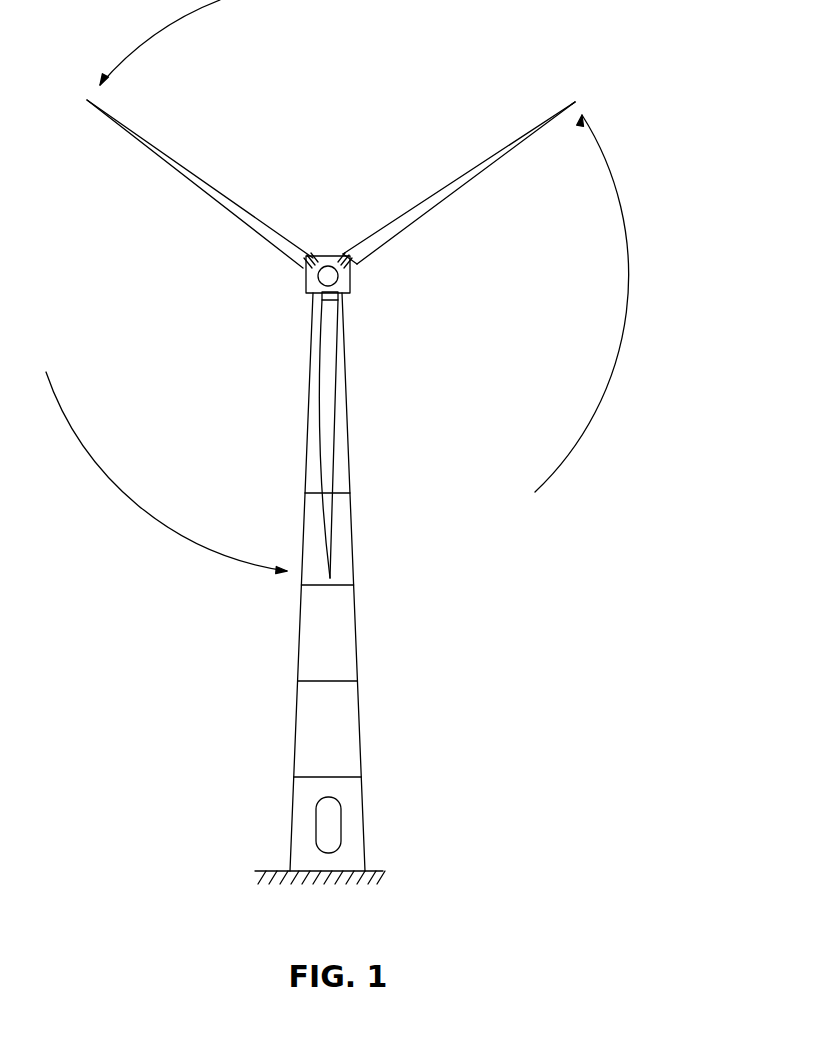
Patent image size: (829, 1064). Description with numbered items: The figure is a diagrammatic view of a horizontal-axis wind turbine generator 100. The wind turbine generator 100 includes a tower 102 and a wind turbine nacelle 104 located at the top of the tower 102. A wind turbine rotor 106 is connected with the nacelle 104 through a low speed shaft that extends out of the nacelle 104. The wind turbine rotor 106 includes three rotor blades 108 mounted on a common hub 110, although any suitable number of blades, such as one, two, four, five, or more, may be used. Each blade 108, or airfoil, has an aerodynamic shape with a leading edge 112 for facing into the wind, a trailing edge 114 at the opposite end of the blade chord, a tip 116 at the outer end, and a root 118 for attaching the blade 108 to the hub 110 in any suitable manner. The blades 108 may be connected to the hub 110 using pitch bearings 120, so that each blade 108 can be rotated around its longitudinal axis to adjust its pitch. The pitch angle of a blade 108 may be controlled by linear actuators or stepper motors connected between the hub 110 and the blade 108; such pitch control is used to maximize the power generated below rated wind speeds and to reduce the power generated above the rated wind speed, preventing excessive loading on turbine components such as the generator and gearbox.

The wind turbine generator 100 is at (280, 737).
The tower 102 is at (350, 645).
The wind turbine nacelle 104 is at (350, 297).
The wind turbine rotor 106 is at (280, 275).
The rotor blade 108 is at (195, 178).
The hub 110 is at (330, 264).
The leading edge 112 is at (480, 162).
The trailing edge 114 is at (475, 185).
The tip 116 is at (582, 88).
The root 118 is at (368, 274).
The pitch bearing 120 is at (348, 258).